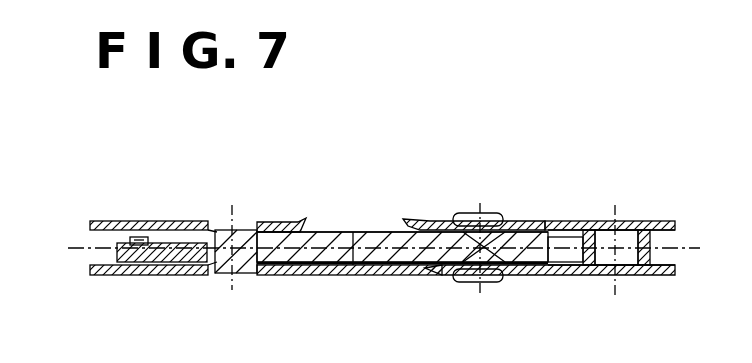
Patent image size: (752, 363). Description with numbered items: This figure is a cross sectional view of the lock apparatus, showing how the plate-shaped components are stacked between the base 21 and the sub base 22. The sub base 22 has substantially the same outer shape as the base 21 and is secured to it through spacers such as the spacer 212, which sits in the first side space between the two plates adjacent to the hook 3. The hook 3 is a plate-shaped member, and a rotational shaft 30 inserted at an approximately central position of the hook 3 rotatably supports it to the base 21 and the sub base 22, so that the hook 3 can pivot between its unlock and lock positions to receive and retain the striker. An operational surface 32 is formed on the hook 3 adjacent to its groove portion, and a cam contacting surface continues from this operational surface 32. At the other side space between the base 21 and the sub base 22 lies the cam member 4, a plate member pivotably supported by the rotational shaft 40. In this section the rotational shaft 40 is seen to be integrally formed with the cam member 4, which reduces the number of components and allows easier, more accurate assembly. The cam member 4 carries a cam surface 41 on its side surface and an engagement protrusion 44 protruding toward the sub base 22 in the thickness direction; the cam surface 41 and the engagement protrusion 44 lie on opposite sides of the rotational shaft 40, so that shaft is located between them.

The hook 3 is at (392, 220).
The cam member 4 is at (300, 222).
The base 21 is at (577, 275).
The sub base 22 is at (565, 221).
The rotational shaft 30 is at (448, 282).
The operational surface 32 is at (346, 275).
The rotational shaft 40 is at (240, 275).
The cam surface 41 is at (366, 228).
The engagement protrusion 44 is at (137, 237).
The spacer 212 is at (628, 275).